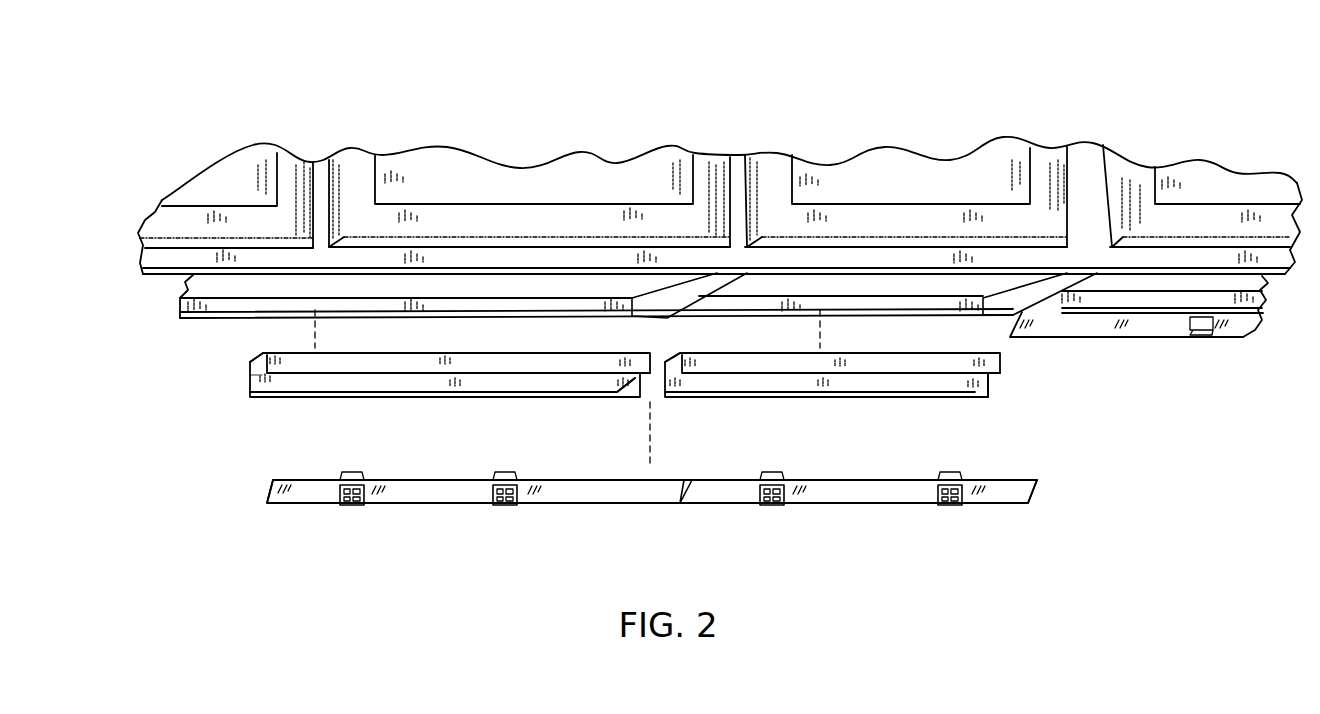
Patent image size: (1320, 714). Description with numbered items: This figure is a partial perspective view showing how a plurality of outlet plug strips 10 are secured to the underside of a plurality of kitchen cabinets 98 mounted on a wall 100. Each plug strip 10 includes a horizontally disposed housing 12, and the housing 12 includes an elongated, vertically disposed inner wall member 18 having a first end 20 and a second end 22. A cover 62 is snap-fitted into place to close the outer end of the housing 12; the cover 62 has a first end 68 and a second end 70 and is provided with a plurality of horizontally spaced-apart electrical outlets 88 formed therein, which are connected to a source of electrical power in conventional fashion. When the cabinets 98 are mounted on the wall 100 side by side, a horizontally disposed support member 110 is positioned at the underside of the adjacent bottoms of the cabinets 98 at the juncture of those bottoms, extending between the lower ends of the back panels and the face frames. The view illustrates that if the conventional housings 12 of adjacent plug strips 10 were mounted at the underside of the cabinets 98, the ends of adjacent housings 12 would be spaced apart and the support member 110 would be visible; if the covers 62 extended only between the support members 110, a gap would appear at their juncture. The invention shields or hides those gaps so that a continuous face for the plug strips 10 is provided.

The plug strip 10 is at (1213, 348).
The housing 12 is at (235, 367).
The inner wall member 18 is at (314, 382).
The first end 20 is at (250, 363).
The second end 22 is at (635, 385).
The cover 62 is at (526, 505).
The first end 68 is at (268, 490).
The second end 70 is at (680, 488).
The electrical outlets 88 is at (346, 507).
The wall cabinet 98 is at (221, 142).
The wall 100 is at (183, 310).
The support member 110 is at (650, 312).